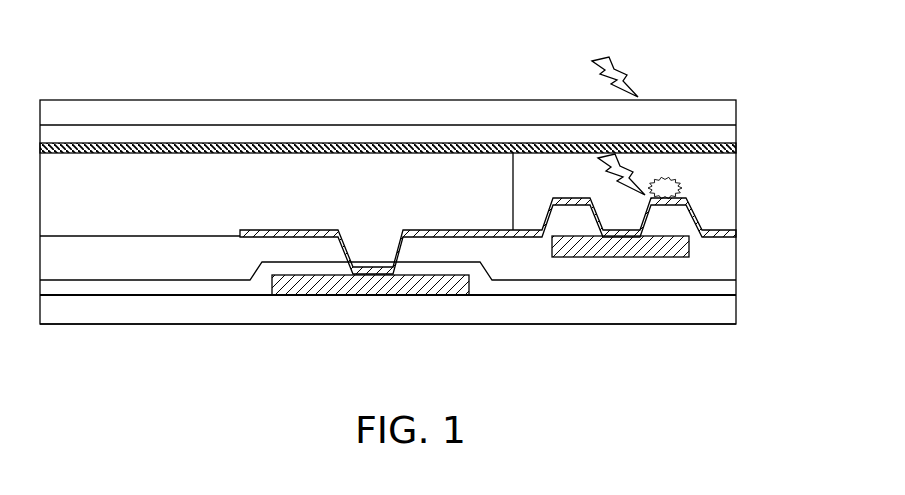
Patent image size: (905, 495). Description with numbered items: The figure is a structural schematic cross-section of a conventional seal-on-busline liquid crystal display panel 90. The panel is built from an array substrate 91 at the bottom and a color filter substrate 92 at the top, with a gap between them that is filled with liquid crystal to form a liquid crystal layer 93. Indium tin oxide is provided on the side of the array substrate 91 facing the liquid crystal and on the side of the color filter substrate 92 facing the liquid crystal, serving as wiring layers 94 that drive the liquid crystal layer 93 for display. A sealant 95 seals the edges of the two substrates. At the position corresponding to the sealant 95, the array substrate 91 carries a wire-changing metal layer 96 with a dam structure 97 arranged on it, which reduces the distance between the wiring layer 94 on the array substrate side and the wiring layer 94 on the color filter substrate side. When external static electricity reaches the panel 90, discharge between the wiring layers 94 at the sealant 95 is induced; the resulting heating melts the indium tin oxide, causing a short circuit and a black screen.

The liquid crystal display panel 90 is at (116, 47).
The array substrate 91 is at (683, 312).
The color filter substrate 92 is at (289, 113).
The liquid crystal layer 93 is at (184, 195).
The wiring layer 94 is at (730, 143).
The sealant 95 is at (717, 198).
The wire-changing metal layer 96 is at (665, 247).
The dam structure 97 is at (565, 217).